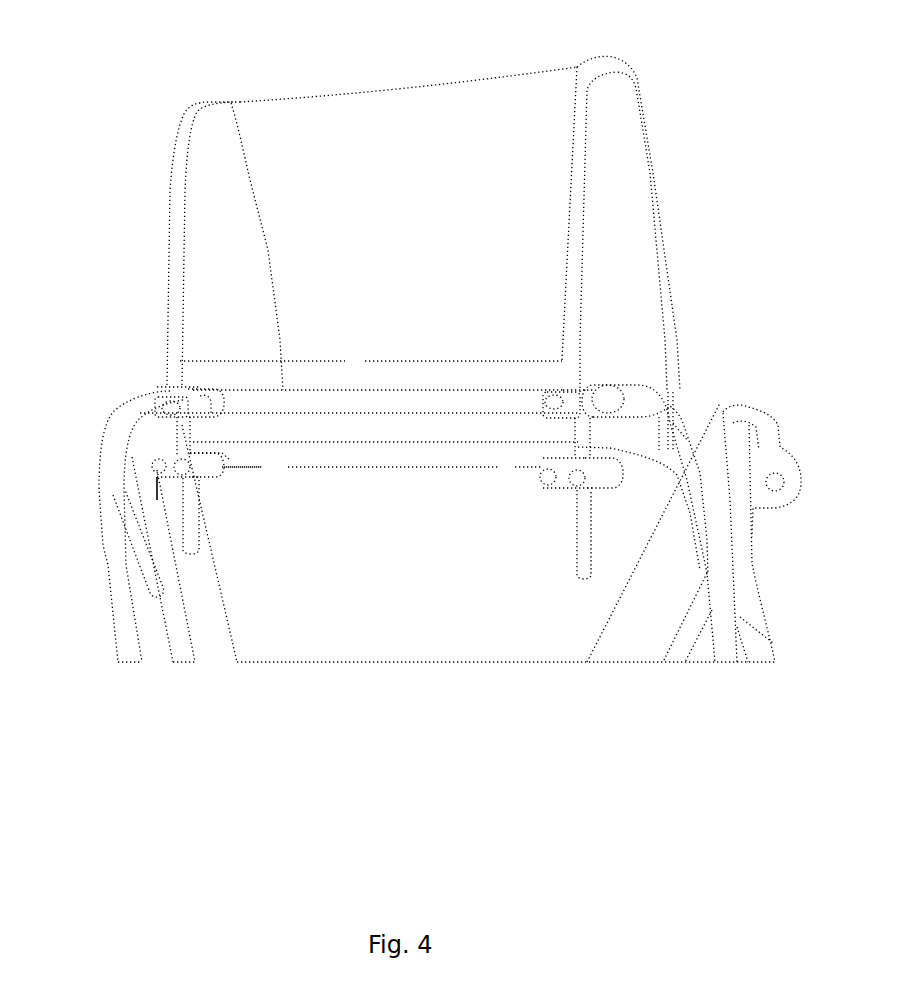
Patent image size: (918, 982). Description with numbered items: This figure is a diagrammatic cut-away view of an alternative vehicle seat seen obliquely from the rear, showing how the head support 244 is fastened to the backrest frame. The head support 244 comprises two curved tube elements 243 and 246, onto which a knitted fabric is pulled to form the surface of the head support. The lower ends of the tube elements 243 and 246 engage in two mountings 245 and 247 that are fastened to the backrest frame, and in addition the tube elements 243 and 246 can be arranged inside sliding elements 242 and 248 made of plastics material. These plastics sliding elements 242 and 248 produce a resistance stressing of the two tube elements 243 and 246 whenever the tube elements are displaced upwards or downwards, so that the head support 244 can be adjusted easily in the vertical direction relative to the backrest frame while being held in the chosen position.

The sliding element 242 is at (686, 479).
The curved tube element 243 is at (142, 355).
The head support 244 is at (396, 224).
The mounting 245 is at (114, 382).
The curved tube element 246 is at (675, 342).
The mounting 247 is at (660, 389).
The sliding element 248 is at (140, 486).